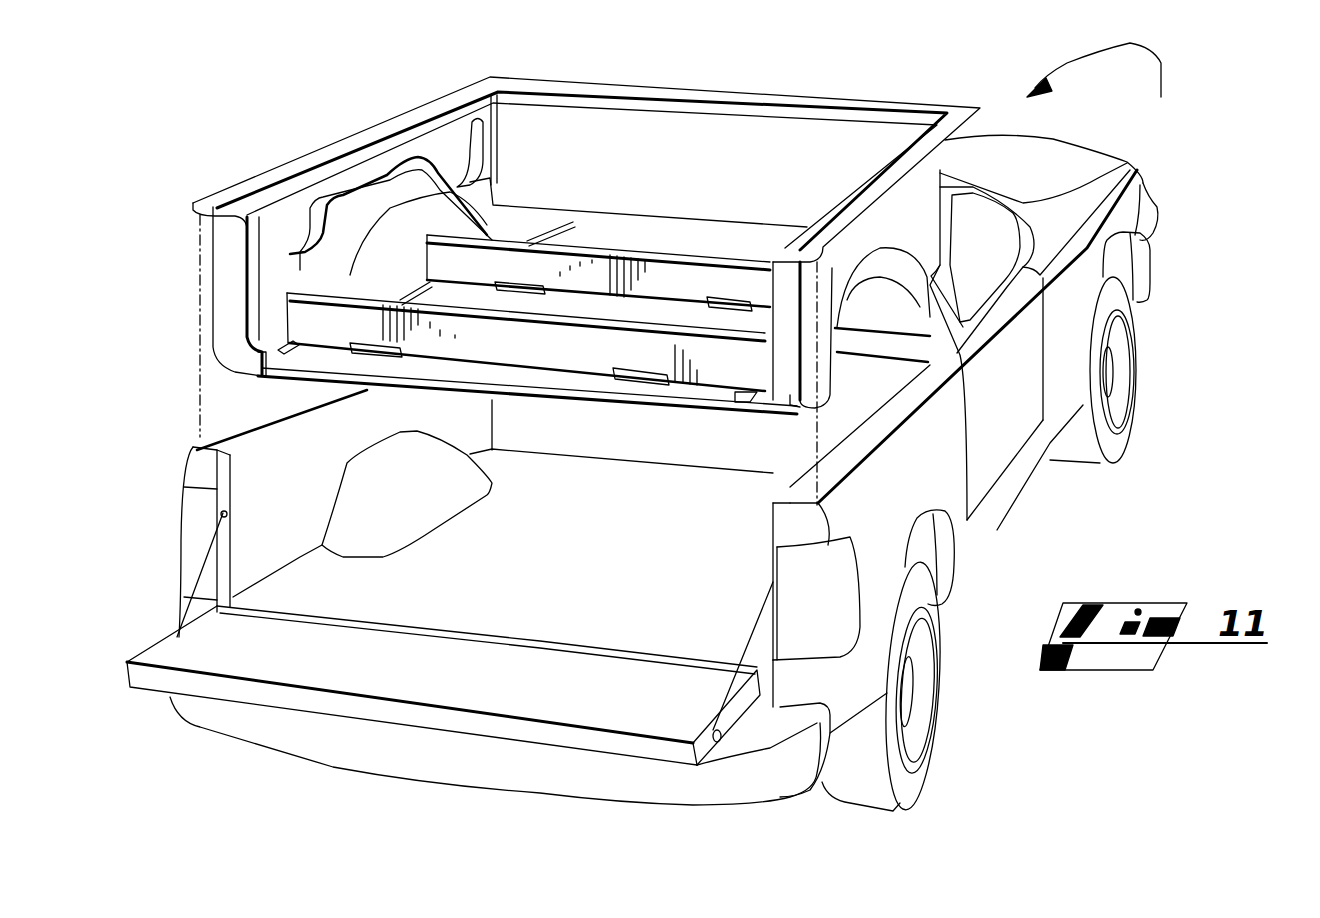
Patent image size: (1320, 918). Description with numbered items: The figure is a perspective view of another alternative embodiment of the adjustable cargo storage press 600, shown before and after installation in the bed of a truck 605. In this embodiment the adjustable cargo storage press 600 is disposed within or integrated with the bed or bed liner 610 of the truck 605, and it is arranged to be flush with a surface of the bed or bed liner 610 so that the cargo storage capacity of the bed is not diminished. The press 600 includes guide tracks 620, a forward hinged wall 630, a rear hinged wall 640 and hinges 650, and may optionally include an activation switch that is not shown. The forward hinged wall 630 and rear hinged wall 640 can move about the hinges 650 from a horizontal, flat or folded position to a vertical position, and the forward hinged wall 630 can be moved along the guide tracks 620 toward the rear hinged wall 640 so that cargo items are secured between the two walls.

The adjustable cargo storage press 600 is at (1097, 153).
The truck 605 is at (1094, 77).
The bed or bed liner 610 is at (430, 110).
The guide tracks 620 is at (300, 315).
The forward hinged wall 630 is at (437, 260).
The rear hinged wall 640 is at (283, 347).
The hinges 650 is at (523, 286).